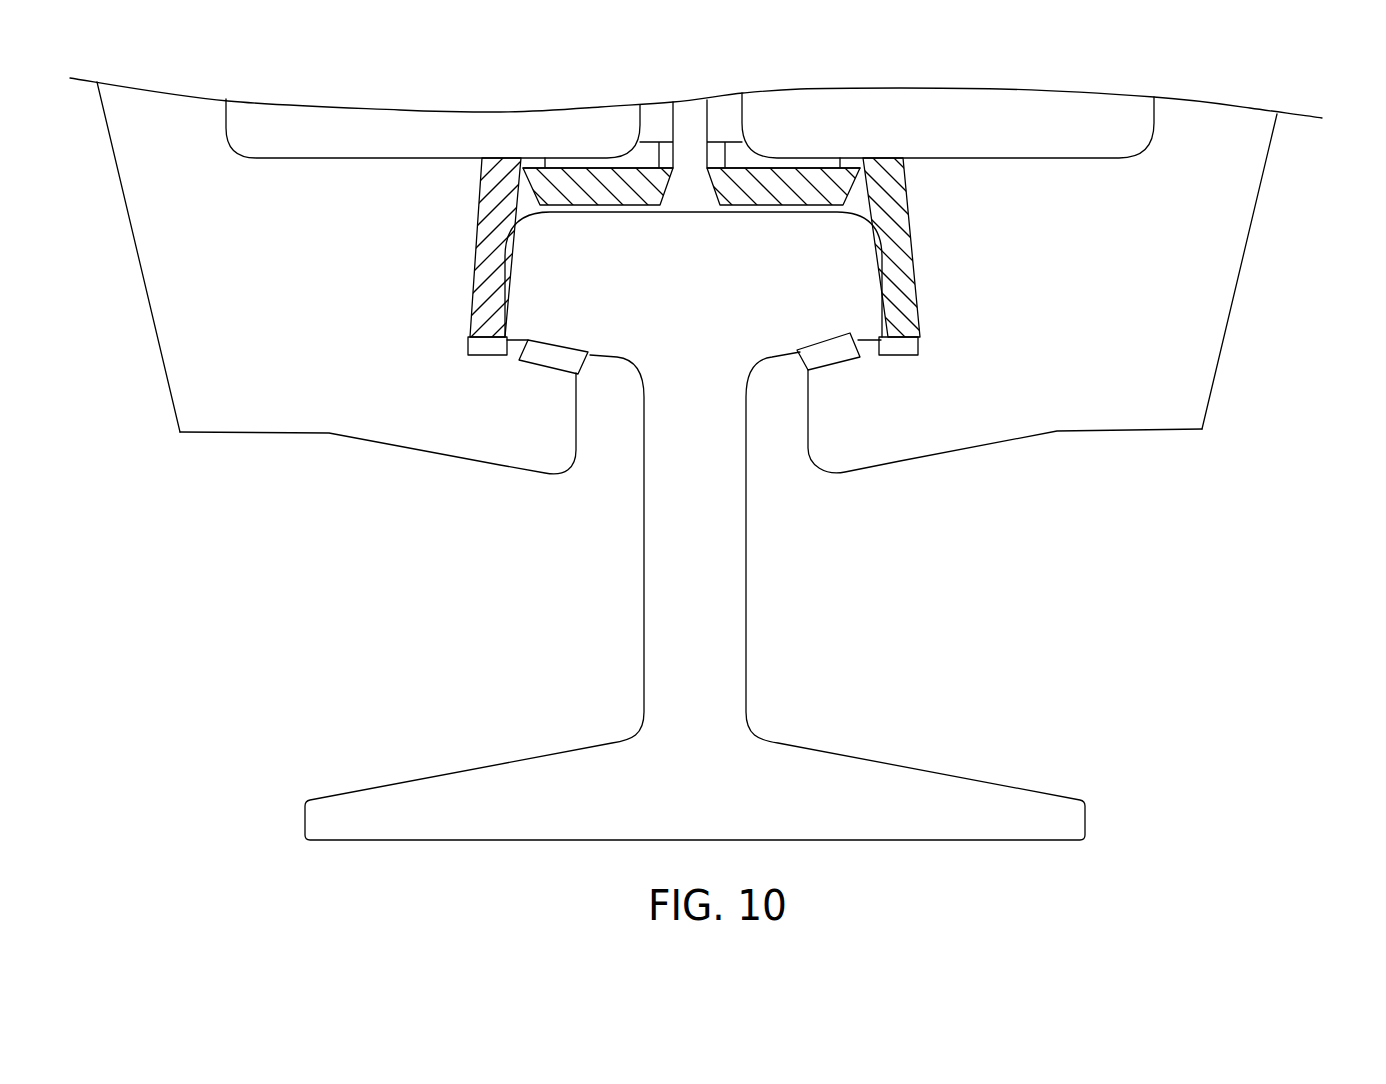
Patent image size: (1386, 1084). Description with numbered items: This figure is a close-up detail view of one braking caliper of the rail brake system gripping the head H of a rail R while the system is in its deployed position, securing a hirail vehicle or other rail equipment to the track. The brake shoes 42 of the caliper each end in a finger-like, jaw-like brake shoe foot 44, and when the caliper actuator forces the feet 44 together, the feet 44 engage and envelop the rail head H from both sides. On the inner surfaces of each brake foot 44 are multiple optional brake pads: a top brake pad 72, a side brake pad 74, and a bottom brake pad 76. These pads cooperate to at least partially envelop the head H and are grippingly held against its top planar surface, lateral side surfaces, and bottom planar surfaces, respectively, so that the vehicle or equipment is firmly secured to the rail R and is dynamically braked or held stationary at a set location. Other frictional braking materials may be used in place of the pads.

The brake shoe 42 is at (138, 136).
The brake shoe foot 44 is at (398, 429).
The top brake pad 72 is at (630, 185).
The side brake pad 74 is at (485, 291).
The bottom brake pad 76 is at (570, 358).
The head H is at (705, 312).
The rail R is at (727, 612).